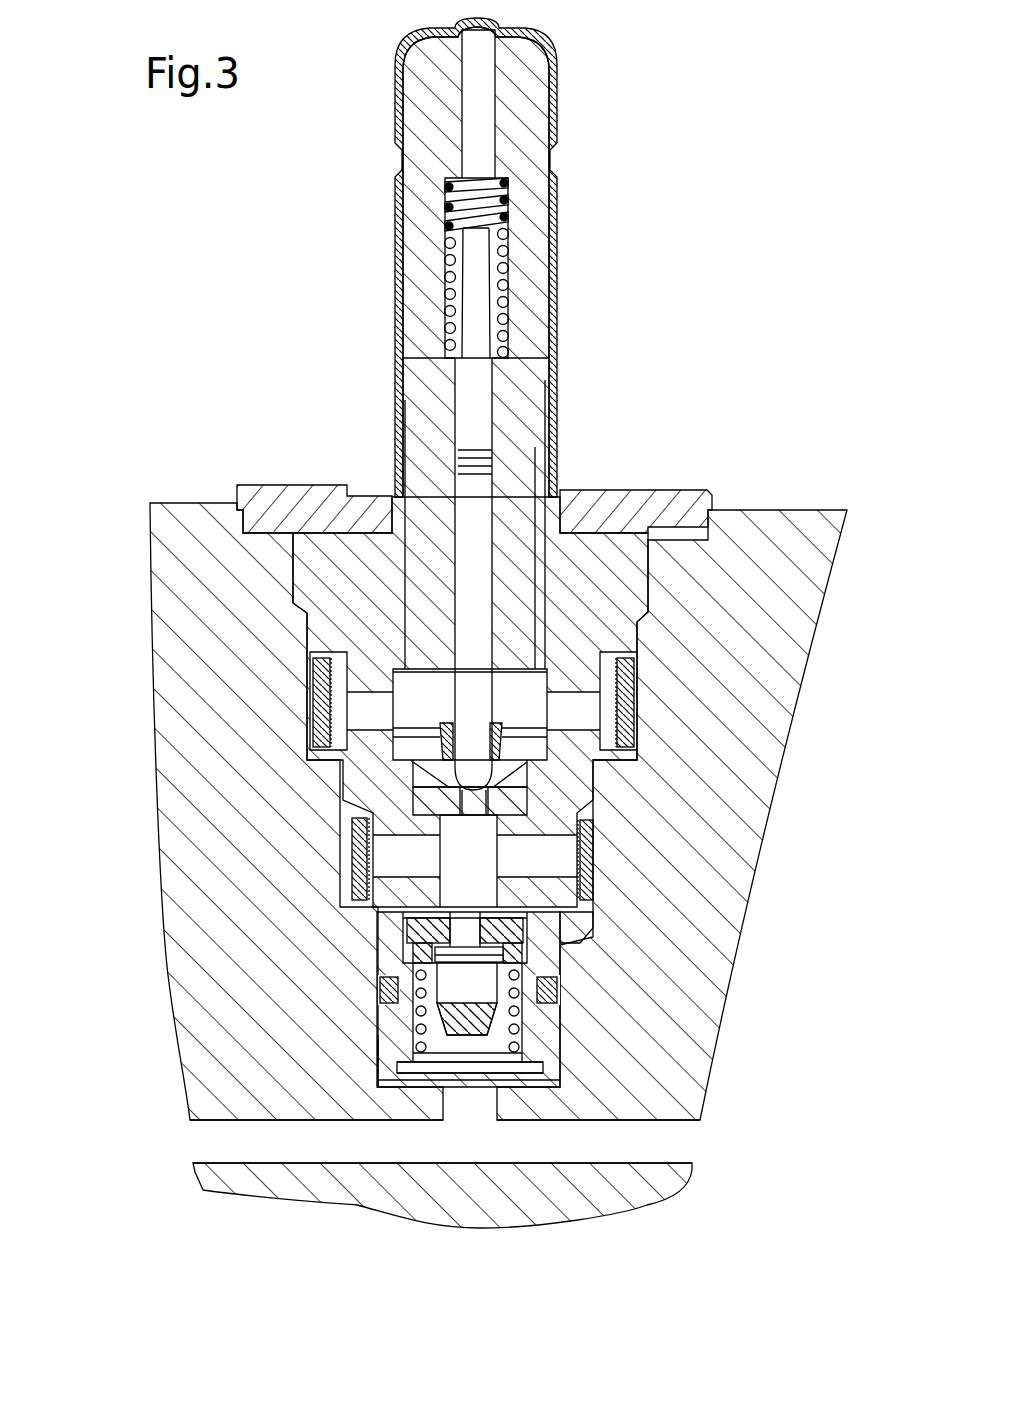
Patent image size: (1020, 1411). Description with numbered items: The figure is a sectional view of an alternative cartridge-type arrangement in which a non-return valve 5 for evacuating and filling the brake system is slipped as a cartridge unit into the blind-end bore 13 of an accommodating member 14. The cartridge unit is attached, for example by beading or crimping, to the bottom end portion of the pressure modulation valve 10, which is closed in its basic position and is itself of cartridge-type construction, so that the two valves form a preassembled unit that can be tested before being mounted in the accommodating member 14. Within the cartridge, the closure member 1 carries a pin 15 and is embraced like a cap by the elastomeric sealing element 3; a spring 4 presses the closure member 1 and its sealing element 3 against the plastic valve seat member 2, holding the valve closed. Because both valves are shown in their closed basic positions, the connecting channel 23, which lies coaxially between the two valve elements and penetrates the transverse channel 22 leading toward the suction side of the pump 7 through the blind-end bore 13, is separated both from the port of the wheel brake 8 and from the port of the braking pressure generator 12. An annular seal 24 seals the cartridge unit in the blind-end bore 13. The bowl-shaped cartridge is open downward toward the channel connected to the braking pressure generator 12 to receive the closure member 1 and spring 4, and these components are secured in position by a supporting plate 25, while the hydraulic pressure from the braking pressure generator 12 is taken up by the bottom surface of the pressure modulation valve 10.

The closure member 1 is at (492, 1028).
The valve seat member 2 is at (507, 935).
The elastomeric sealing element 3 is at (426, 1018).
The spring 4 is at (378, 1035).
The non-return valve 5 is at (370, 1050).
The pump 7 is at (347, 860).
The wheel brake 8 is at (304, 702).
The pressure modulation valve 10 is at (322, 492).
The braking pressure generator 12 is at (190, 1138).
The blind-end bore 13 is at (421, 1082).
The accommodating member 14 is at (733, 523).
The pin 15 is at (432, 930).
The transverse channel 22 is at (575, 856).
The connecting channel 23 is at (413, 913).
The annular seal 24 is at (557, 992).
The supporting plate 25 is at (511, 1025).